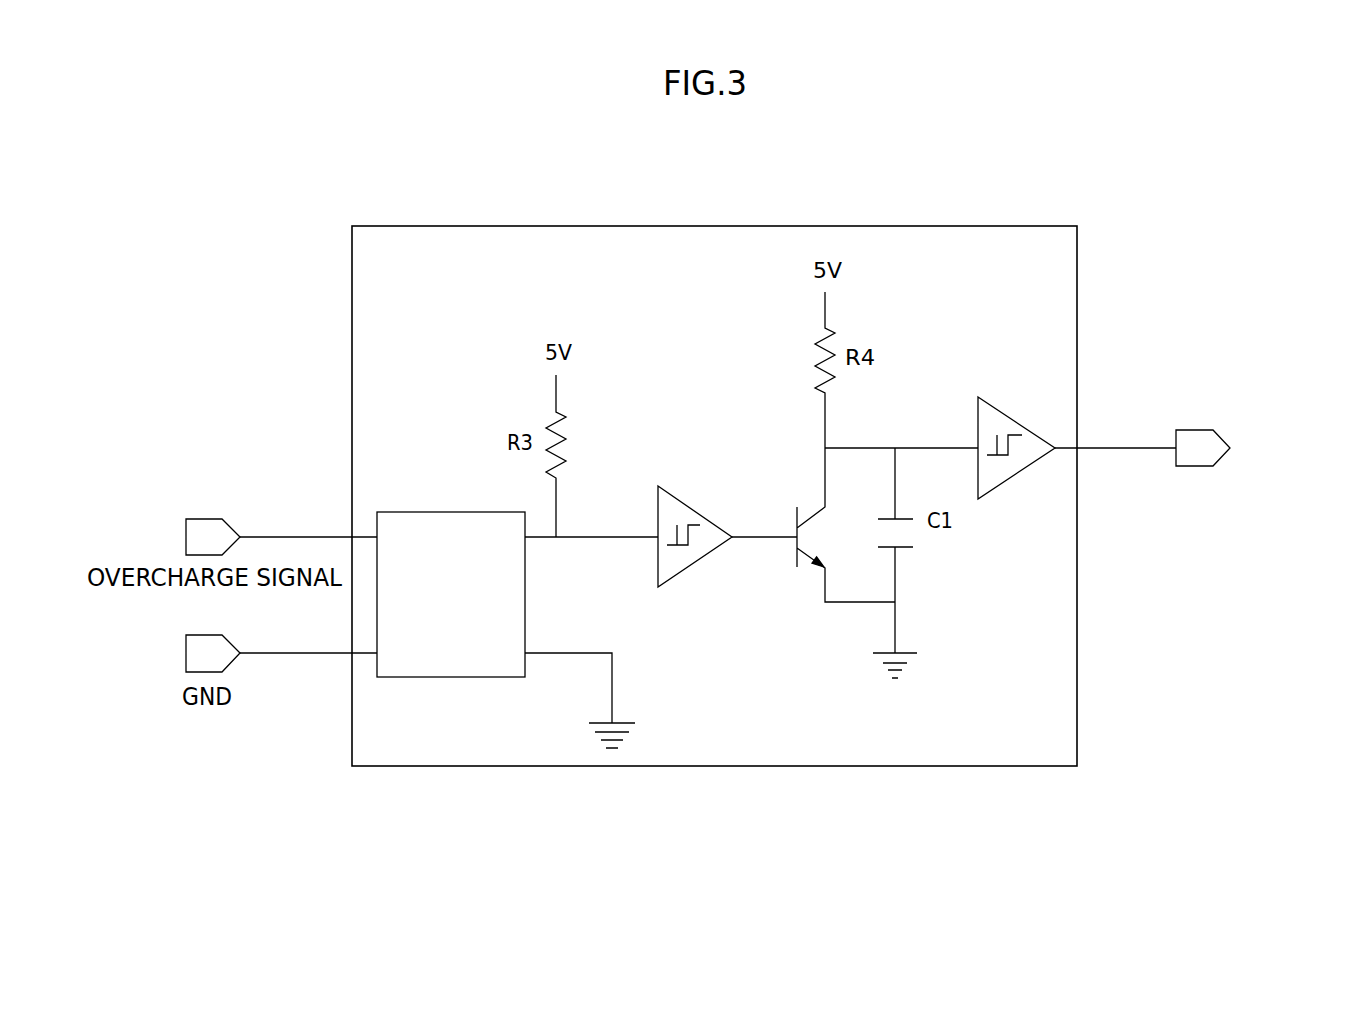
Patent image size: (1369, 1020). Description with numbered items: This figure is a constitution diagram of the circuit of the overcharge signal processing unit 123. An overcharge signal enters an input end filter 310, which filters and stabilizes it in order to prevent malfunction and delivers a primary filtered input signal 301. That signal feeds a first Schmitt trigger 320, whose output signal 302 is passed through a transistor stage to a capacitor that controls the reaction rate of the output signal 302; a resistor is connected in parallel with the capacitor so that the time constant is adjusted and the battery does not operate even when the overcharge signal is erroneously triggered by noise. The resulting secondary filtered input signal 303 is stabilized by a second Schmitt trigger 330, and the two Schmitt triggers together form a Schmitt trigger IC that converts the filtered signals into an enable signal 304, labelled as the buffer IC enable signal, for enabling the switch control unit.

The overcharge signal processing unit 123 is at (437, 273).
The input end filter 310 is at (450, 500).
The primary filtered input signal 301 is at (592, 535).
The first Schmitt trigger 320 is at (693, 508).
The output signal 302 is at (757, 540).
The secondary filtered input signal 303 is at (925, 447).
The second Schmitt trigger 330 is at (1017, 420).
The enable signal 304 is at (1193, 481).